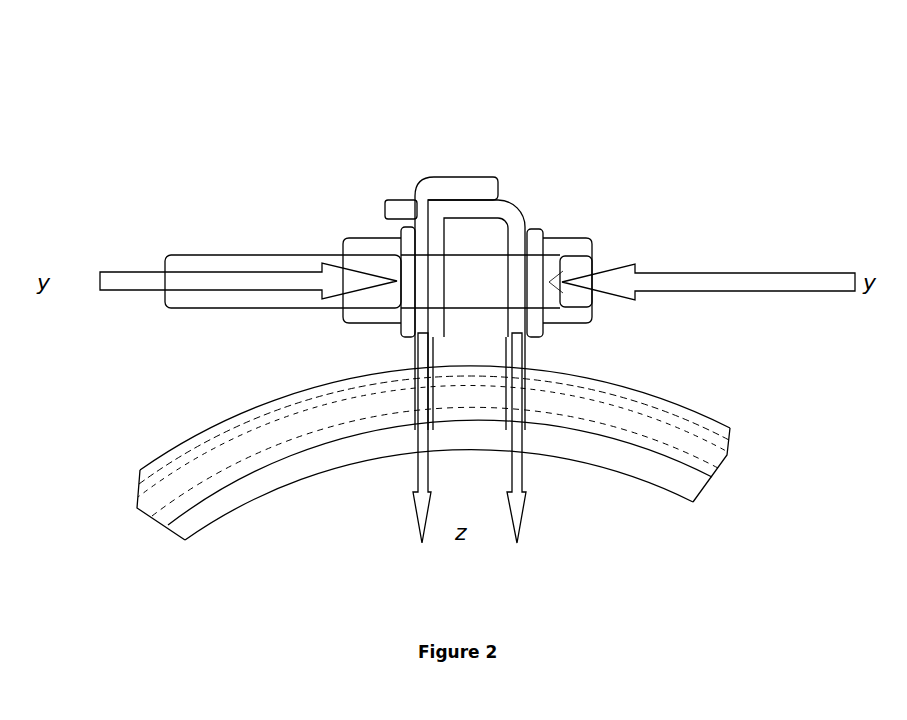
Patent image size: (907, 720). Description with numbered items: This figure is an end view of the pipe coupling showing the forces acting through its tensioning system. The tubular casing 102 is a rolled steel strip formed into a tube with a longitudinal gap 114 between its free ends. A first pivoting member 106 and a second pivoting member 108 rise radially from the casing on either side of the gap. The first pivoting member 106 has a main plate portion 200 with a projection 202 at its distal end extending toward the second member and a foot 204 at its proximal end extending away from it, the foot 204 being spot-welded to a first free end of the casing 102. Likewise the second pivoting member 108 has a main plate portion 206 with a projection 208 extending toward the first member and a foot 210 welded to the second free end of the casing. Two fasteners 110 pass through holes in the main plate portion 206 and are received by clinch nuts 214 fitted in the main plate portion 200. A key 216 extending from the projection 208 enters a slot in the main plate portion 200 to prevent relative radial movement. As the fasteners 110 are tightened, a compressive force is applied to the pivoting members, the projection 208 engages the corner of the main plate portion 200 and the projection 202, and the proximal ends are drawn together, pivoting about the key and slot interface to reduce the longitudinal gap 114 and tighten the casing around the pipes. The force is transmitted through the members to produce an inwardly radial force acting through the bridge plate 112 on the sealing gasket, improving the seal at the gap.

The tubular casing 102 is at (518, 499).
The first pivoting member 106 is at (416, 189).
The second pivoting member 108 is at (517, 198).
The fasteners 110 is at (594, 246).
The bridge plate 112 is at (650, 430).
The longitudinal gap 114 is at (482, 366).
The main plate portion 200 is at (416, 342).
The projection 202 is at (463, 190).
The foot 204 is at (338, 403).
The main plate portion 206 is at (527, 353).
The projection 208 is at (505, 210).
The foot 210 is at (567, 390).
The clinch nuts 214 is at (360, 247).
The key 216 is at (395, 208).